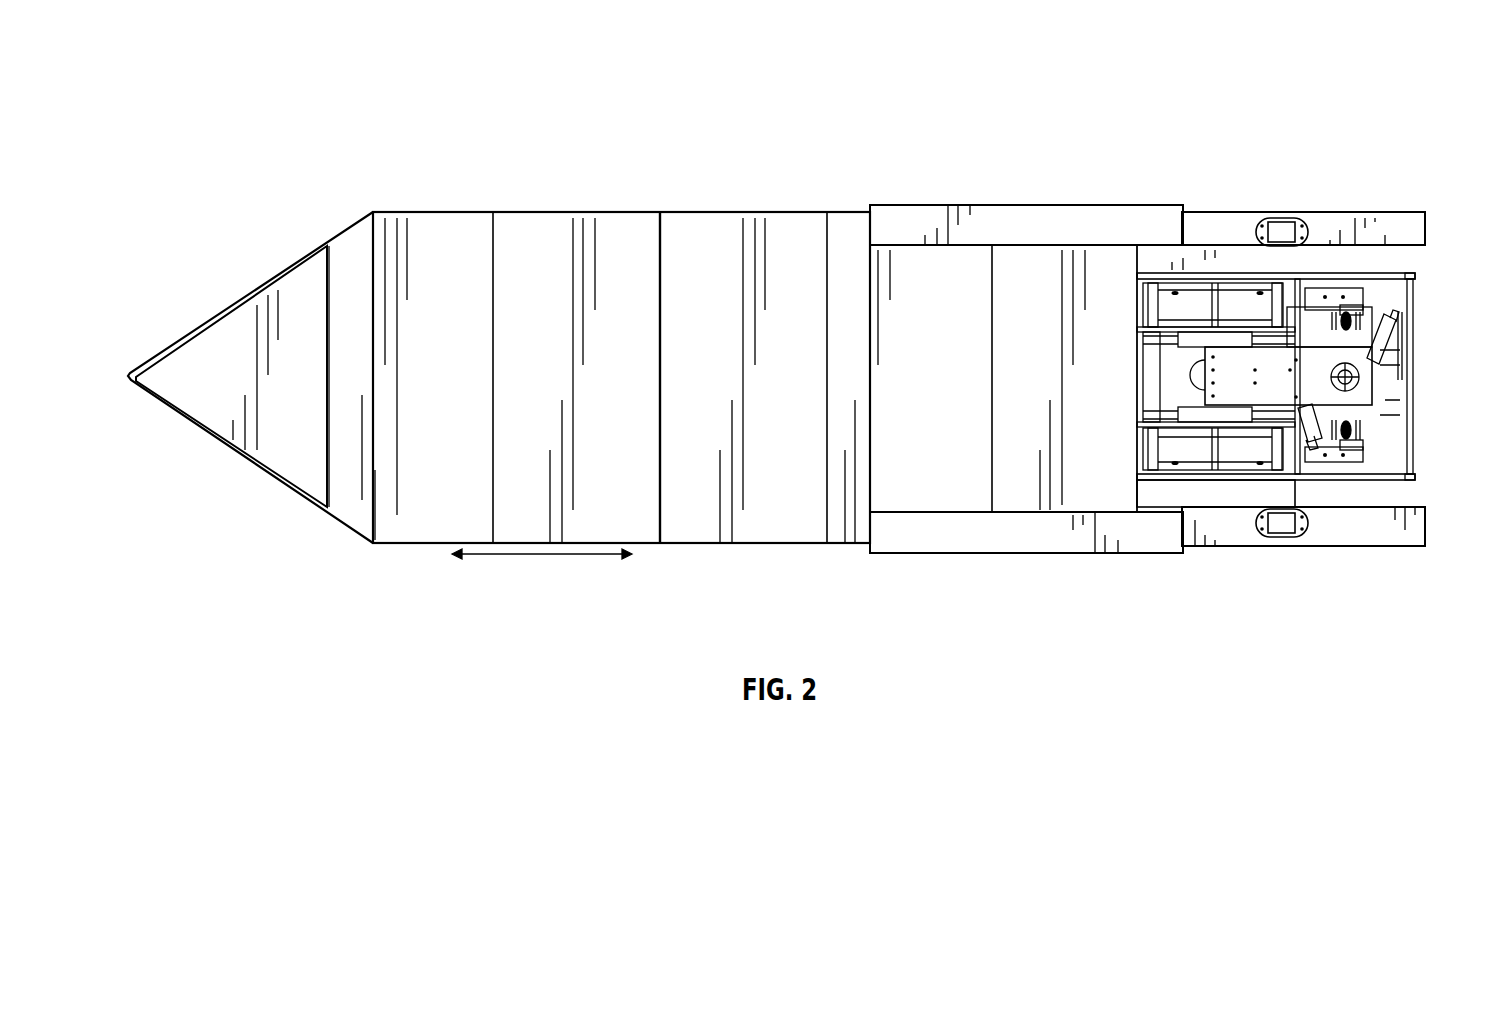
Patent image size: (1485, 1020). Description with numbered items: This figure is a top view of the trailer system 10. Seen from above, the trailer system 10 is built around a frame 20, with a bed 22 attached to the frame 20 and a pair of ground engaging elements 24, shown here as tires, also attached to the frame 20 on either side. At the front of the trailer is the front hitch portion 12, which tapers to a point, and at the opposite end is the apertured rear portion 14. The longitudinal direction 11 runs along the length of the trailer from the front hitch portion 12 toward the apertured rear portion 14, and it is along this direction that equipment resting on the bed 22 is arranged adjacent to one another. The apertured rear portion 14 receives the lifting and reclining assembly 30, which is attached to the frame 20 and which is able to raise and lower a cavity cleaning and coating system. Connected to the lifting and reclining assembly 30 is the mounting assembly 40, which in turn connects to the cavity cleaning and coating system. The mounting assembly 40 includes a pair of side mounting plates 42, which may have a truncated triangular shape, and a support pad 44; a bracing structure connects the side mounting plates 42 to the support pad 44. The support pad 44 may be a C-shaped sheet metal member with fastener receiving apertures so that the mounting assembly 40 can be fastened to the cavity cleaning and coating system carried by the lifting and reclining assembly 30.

The trailer system 10 is at (785, 331).
The longitudinal direction 11 is at (540, 556).
The front hitch portion 12 is at (128, 379).
The apertured rear portion 14 is at (1344, 547).
The frame 20 is at (810, 548).
The bed 22 is at (683, 287).
The ground engaging elements 24 is at (1132, 205).
The lifting and reclining assembly 30 is at (1413, 373).
The mounting assembly 40 is at (1262, 357).
The side mounting plates 42 is at (1375, 273).
The support pad 44 is at (1312, 360).